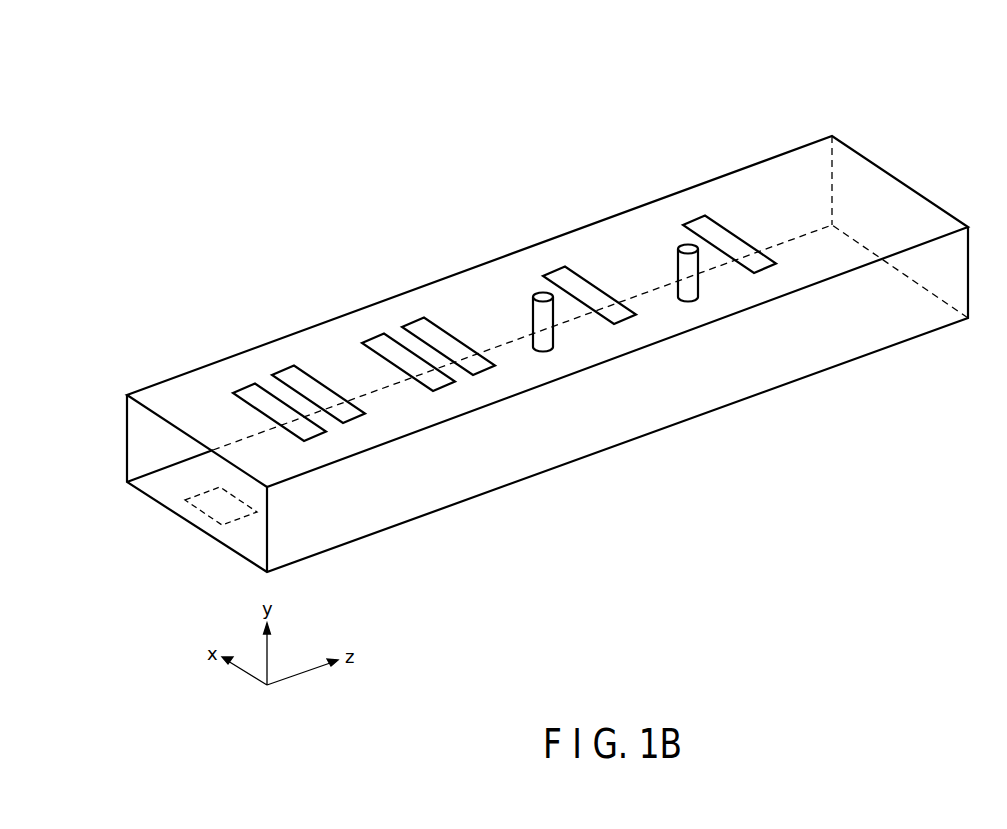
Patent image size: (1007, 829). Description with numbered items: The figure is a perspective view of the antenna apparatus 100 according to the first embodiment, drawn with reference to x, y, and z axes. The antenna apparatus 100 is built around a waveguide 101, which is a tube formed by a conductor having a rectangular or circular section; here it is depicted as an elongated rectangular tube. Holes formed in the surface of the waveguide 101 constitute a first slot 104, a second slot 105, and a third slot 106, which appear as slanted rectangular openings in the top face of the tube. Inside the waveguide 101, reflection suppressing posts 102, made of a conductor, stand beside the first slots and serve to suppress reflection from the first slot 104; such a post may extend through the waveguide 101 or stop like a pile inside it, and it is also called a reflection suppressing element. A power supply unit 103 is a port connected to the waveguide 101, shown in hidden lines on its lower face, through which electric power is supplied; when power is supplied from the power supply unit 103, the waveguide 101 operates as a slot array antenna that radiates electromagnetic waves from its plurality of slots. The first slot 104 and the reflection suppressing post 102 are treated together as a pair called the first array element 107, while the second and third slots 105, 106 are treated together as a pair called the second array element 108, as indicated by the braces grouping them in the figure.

The antenna apparatus 100 is at (647, 103).
The waveguide 101 is at (755, 162).
The reflection suppressing post 102 is at (696, 289).
The power supply unit 103 is at (210, 507).
The first slot 104 is at (768, 267).
The second slot 105 is at (485, 372).
The third slot 106 is at (452, 383).
The first array element 107 is at (878, 378).
The second array element 108 is at (593, 483).